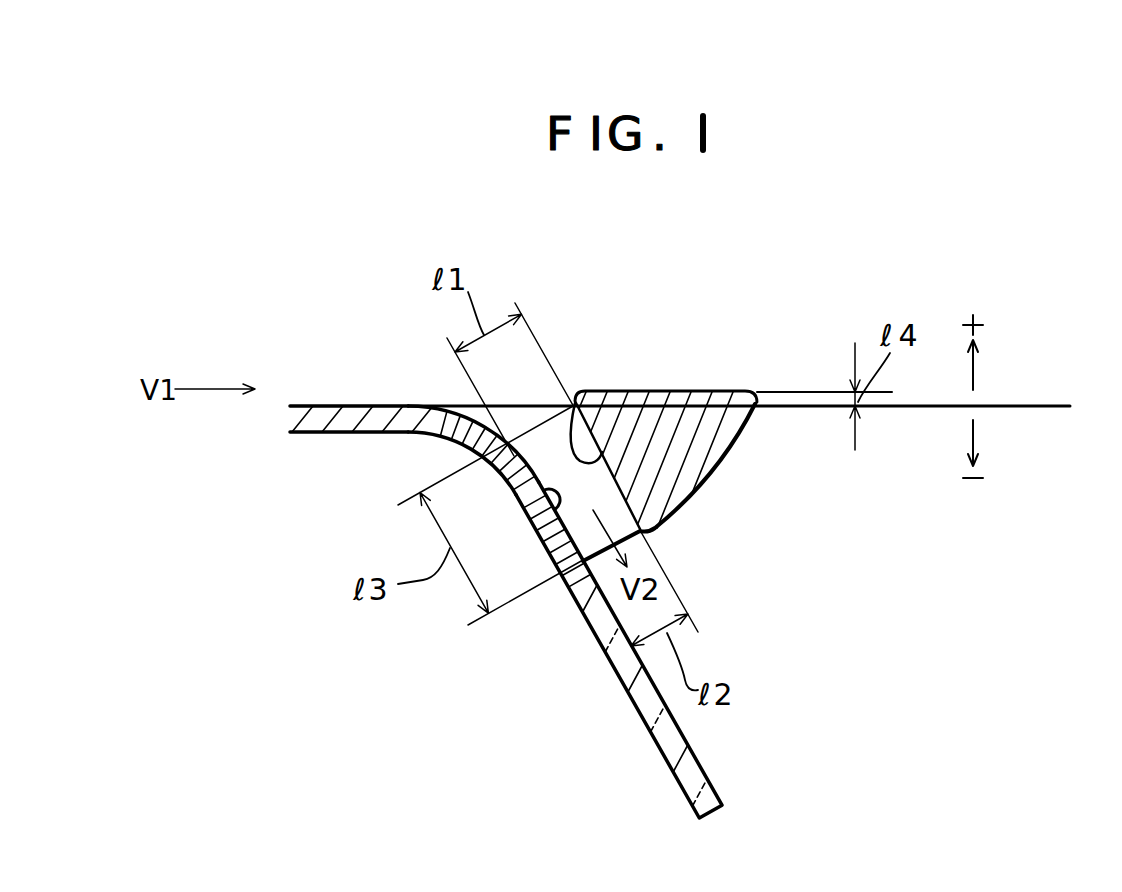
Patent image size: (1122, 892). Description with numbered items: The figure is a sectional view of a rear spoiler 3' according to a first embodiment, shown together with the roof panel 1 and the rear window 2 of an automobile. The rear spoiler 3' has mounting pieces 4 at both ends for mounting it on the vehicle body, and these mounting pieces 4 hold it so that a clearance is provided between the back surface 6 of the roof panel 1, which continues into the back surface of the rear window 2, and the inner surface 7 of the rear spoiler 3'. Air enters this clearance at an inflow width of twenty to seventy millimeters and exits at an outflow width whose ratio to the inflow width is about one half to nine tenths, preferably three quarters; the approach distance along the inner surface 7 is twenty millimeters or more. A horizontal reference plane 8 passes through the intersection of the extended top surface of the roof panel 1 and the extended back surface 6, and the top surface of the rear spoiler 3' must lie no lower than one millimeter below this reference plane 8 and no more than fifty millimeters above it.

The roof panel 1 is at (335, 405).
The rear window 2 is at (694, 783).
The rear spoiler 3' is at (666, 432).
The mounting pieces 4 is at (536, 407).
The back surface 6 is at (543, 540).
The inner surface 7 is at (606, 397).
The horizontal plane (reference plane) 8 is at (1027, 404).